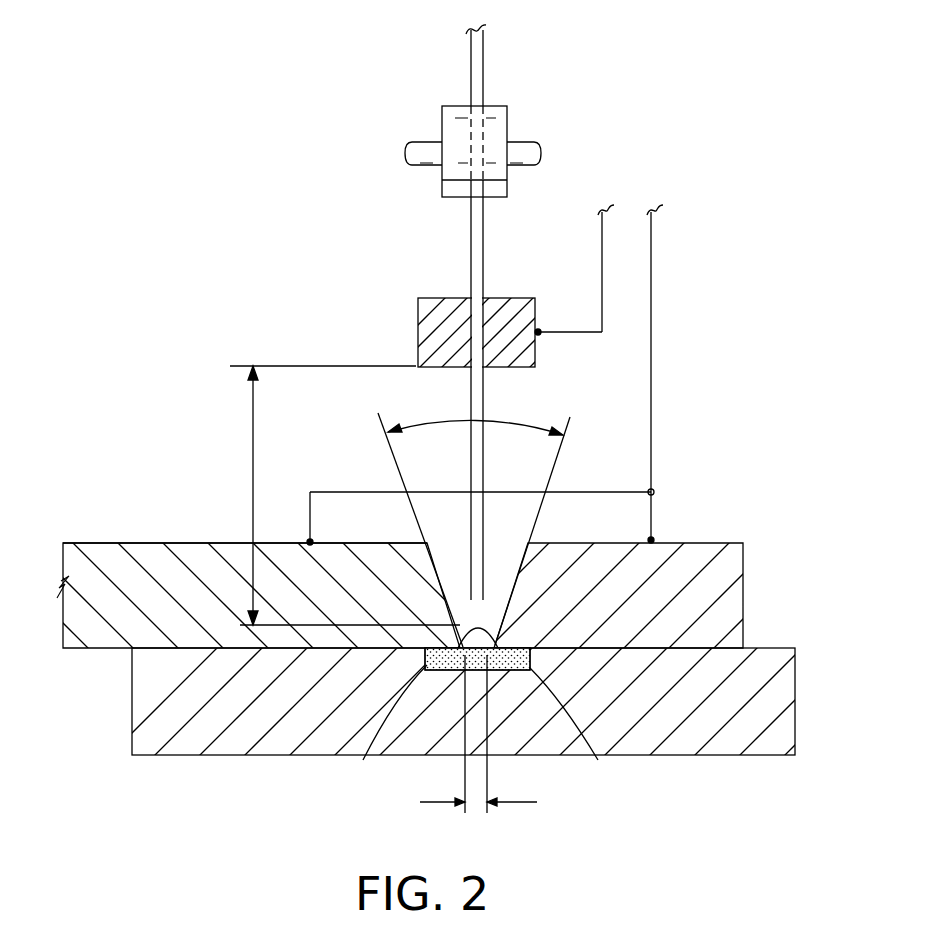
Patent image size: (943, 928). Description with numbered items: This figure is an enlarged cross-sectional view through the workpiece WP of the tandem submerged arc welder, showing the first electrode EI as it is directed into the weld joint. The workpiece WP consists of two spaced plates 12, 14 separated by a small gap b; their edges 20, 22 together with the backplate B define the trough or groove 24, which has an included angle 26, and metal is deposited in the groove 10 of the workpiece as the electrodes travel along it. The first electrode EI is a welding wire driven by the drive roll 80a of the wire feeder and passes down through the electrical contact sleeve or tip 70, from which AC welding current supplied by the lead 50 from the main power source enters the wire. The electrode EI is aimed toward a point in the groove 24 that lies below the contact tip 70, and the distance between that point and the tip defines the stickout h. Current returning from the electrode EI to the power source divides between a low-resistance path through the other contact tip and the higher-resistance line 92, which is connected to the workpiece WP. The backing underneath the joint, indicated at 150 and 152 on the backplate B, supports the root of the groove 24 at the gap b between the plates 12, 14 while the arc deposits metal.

The first electrode EI is at (483, 58).
The drive roll 80a is at (498, 125).
The contact tip 70 is at (425, 320).
The lead 50 is at (602, 227).
The line 92 is at (652, 240).
The angle 26 is at (510, 422).
The groove 10 is at (497, 548).
The edge 20 is at (433, 556).
The edge 22 is at (520, 566).
The trough or groove 24 is at (503, 609).
The plate 12 is at (107, 556).
The plate 14 is at (692, 553).
The workpiece WP is at (181, 541).
The backplate B is at (223, 757).
The backing groove side 150 is at (592, 730).
The backing groove side 152 is at (376, 729).
The stickout h is at (345, 495).
The gap b is at (488, 736).